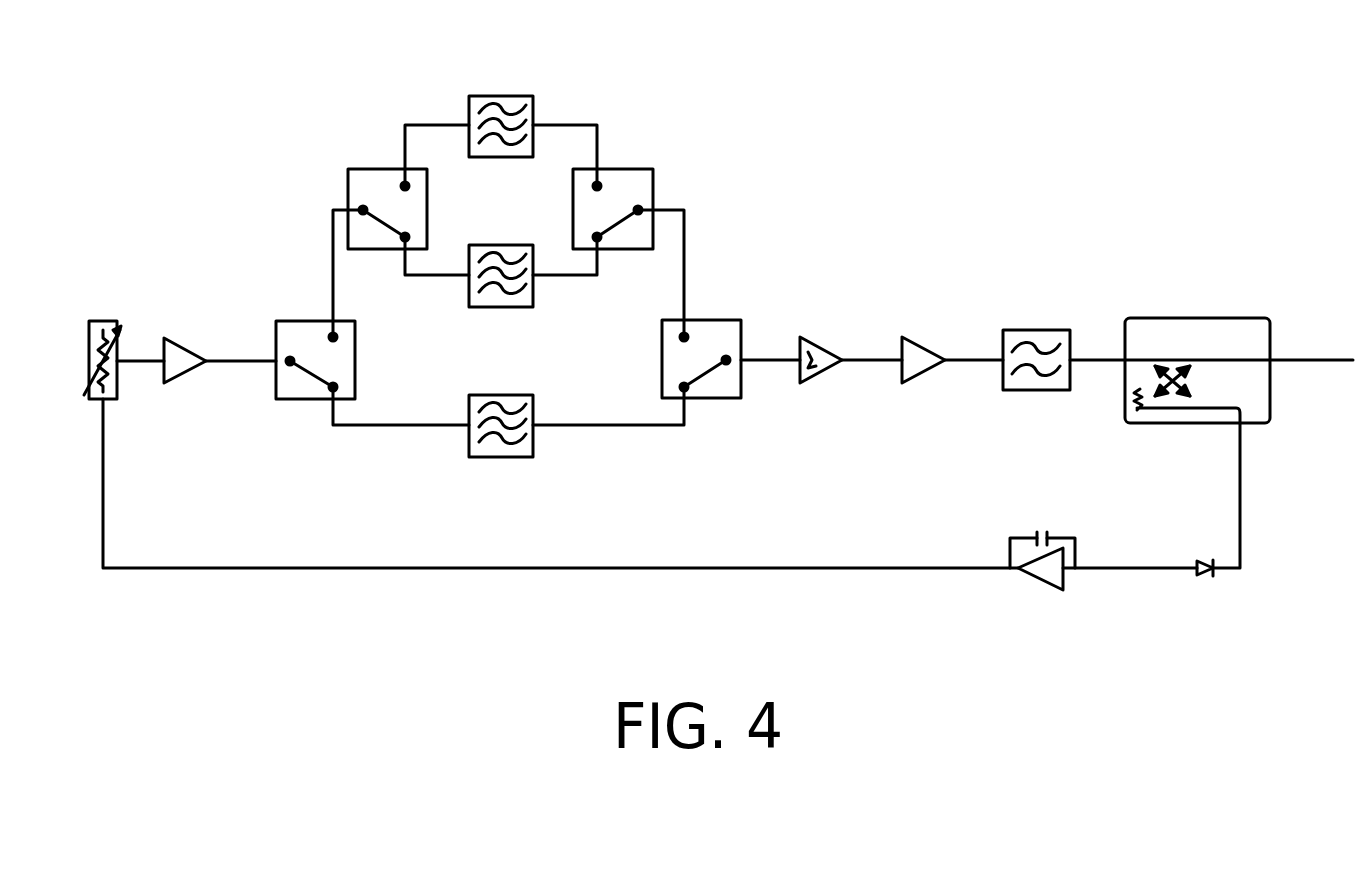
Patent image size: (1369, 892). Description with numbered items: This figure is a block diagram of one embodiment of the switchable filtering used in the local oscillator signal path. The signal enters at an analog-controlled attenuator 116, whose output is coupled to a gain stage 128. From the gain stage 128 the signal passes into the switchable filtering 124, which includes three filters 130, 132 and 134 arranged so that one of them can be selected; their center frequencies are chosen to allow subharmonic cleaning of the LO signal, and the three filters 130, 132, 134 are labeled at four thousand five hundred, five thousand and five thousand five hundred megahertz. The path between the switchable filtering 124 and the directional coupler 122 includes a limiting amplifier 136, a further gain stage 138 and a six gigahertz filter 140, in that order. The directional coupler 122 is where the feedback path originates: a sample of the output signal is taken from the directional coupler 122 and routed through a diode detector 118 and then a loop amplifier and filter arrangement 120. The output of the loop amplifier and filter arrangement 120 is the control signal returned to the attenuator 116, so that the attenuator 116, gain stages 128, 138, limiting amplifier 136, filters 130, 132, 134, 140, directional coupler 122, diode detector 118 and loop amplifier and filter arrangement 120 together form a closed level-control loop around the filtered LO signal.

The analog-controlled attenuator 116 is at (110, 398).
The diode detector 118 is at (1197, 566).
The loop amplifier and filter arrangement 120 is at (1010, 555).
The directional coupler 122 is at (1241, 328).
The switchable filtering 124 is at (508, 269).
The gain stage 128 is at (187, 355).
The filter 130 is at (521, 97).
The filter 132 is at (468, 278).
The filter 134 is at (531, 413).
The limiting amplifier 136 is at (831, 354).
The gain stage 138 is at (934, 356).
The 6.0 GHz filter 140 is at (1054, 337).